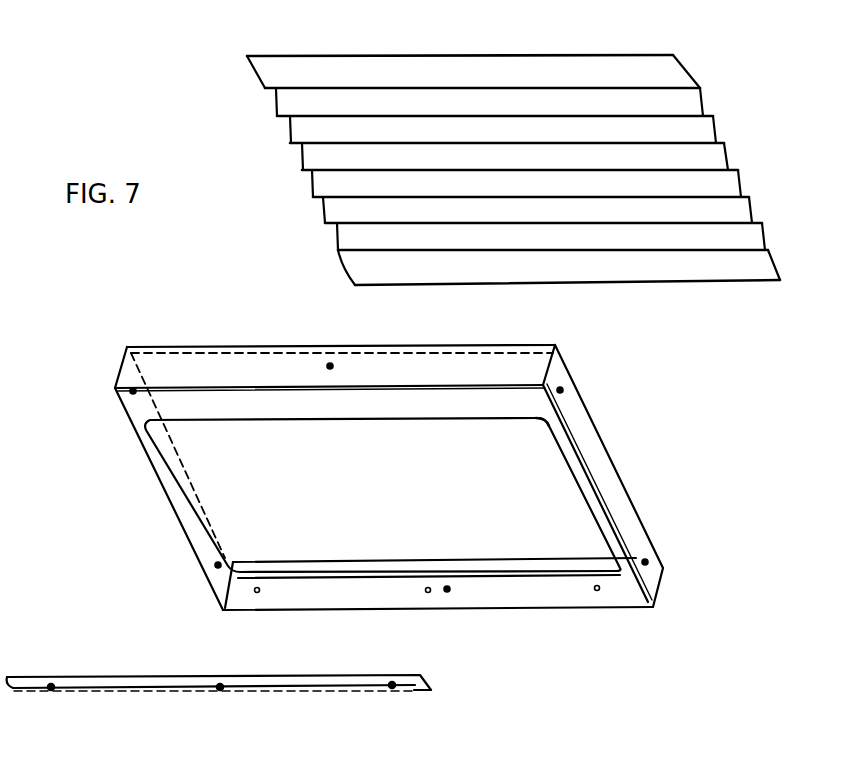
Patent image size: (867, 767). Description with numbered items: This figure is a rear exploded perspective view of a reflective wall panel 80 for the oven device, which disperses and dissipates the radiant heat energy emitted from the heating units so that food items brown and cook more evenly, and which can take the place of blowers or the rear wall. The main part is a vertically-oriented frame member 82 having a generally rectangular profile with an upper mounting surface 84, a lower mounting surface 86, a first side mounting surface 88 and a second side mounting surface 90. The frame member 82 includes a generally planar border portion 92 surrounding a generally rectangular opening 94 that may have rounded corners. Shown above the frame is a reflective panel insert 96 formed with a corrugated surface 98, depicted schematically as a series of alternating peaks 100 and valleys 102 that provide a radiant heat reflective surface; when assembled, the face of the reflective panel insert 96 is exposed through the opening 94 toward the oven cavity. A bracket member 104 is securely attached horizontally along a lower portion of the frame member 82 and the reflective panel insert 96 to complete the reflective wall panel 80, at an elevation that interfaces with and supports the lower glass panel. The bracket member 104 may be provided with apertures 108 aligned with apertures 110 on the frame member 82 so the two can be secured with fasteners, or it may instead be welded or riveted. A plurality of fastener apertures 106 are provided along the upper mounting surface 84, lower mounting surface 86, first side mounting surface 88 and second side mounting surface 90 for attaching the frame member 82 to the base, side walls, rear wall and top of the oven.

The reflective wall panel 80 is at (128, 33).
The frame member 82 is at (130, 420).
The upper mounting surface 84 is at (175, 372).
The lower mounting surface 86 is at (617, 597).
The first side mounting surface 88 is at (222, 588).
The second side mounting surface 90 is at (612, 490).
The border portion 92 is at (530, 417).
The opening 94 is at (530, 470).
The reflective panel insert 96 is at (332, 56).
The corrugated surface 98 is at (280, 77).
The peaks 100 is at (700, 88).
The valleys 102 is at (276, 117).
The bracket member 104 is at (28, 676).
The fastener apertures 106 is at (333, 364).
The apertures 108 is at (51, 690).
The apertures 110 is at (257, 594).